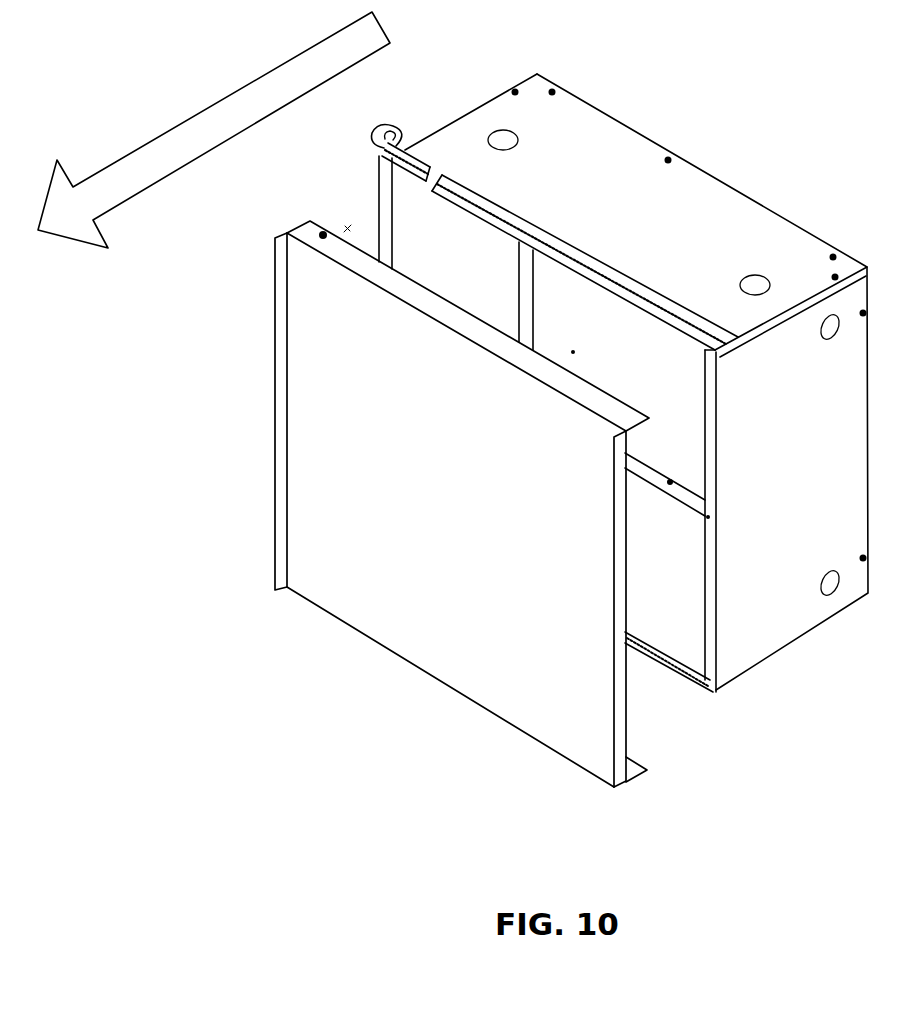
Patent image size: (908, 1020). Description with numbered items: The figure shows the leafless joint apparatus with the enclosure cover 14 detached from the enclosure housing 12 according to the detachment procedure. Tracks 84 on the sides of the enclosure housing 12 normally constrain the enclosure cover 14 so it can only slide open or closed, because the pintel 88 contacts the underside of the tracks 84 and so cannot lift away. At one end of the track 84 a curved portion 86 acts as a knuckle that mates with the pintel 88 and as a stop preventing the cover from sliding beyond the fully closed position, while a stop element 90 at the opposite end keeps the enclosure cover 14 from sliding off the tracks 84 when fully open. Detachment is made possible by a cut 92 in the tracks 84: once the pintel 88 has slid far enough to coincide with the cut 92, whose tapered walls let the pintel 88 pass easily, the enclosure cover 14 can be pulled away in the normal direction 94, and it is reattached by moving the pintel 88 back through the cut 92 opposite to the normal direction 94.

The enclosure housing 12 is at (722, 176).
The enclosure cover 14 is at (429, 497).
The track 84 is at (575, 241).
The curved portion 86 is at (374, 133).
The pintel 88 is at (321, 228).
The stop element 90 is at (726, 345).
The cut 92 is at (438, 170).
The normal direction 94 is at (214, 130).